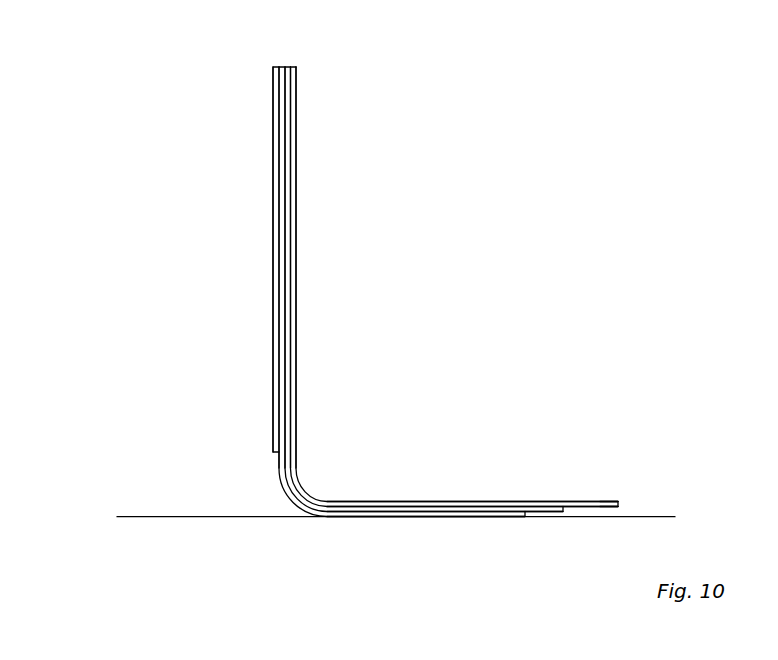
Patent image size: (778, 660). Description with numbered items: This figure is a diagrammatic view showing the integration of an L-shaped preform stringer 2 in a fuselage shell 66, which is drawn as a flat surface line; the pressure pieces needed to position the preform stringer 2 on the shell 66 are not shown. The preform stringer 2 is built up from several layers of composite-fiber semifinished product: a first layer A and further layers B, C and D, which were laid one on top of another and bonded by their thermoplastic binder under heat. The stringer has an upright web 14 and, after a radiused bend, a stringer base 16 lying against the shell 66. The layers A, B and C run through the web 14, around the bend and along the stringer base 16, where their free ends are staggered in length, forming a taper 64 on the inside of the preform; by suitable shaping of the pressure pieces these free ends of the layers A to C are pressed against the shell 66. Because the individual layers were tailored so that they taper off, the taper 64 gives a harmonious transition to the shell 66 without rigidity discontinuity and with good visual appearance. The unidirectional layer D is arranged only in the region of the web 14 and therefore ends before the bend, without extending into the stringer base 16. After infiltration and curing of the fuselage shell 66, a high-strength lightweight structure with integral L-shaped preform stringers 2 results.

The L-shaped preform stringer 2 is at (154, 115).
The web 14 is at (283, 362).
The stringer base 16 is at (470, 503).
The taper 64 is at (631, 458).
The fuselage shell 66 is at (277, 517).
The first layer A is at (598, 507).
The further layer B is at (548, 511).
The further layer C is at (463, 517).
The unidirectional layer D is at (273, 392).